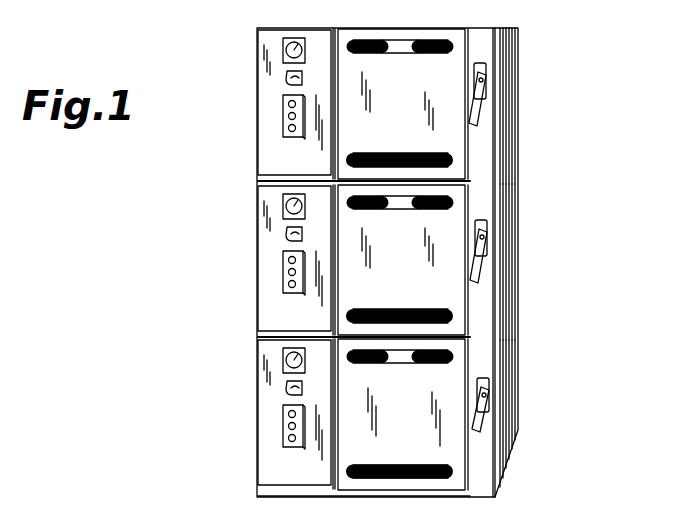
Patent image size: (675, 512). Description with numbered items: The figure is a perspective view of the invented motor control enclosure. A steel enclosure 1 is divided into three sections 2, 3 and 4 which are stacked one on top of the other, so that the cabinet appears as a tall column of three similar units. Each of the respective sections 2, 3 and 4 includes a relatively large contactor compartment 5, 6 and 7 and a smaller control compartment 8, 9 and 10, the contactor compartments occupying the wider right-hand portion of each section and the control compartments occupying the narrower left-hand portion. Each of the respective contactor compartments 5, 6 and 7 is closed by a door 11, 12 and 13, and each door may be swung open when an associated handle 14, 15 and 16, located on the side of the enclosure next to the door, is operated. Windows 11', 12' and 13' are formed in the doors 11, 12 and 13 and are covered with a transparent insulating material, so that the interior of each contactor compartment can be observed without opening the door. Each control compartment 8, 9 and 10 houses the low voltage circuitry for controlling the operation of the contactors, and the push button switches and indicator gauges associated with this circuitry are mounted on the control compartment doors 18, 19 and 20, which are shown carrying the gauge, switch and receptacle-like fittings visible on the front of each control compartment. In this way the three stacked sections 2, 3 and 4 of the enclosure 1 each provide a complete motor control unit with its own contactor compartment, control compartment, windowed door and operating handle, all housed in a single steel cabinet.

The steel enclosure 1 is at (556, 196).
The section 2 is at (248, 135).
The section 3 is at (248, 250).
The section 4 is at (247, 411).
The contactor compartment 5 is at (507, 95).
The contactor compartment 6 is at (508, 265).
The contactor compartment 7 is at (505, 378).
The control compartment 8 is at (258, 88).
The control compartment 9 is at (258, 218).
The control compartment 10 is at (258, 372).
The door 11 is at (403, 104).
The window 11' is at (414, 60).
The door 12 is at (403, 260).
The window 12' is at (409, 213).
The door 13 is at (403, 414).
The window 13' is at (386, 368).
The handle 14 is at (479, 117).
The handle 15 is at (486, 280).
The handle 16 is at (485, 428).
The door 18 is at (298, 162).
The door 19 is at (300, 321).
The door 20 is at (305, 470).